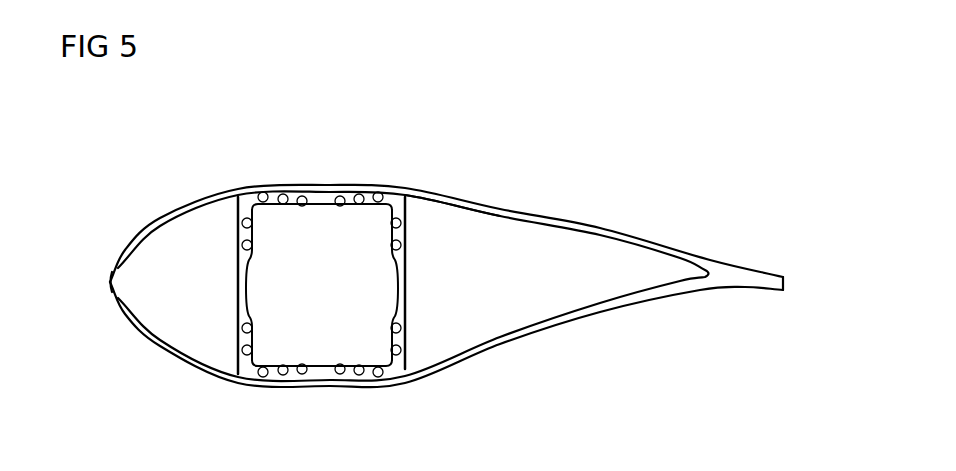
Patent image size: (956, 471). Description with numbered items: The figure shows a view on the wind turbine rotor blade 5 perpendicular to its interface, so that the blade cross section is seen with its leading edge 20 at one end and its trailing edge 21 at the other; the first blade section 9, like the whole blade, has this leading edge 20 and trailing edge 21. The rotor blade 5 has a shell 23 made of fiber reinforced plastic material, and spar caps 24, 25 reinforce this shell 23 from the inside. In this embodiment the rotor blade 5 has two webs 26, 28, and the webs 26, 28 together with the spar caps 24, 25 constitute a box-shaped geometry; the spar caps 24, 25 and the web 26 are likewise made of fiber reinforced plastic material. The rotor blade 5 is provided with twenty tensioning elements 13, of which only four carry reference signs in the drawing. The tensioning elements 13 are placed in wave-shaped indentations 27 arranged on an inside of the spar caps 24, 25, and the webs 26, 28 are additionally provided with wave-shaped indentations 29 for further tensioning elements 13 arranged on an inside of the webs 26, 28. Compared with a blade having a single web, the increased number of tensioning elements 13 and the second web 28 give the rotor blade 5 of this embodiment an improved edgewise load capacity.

The rotor blade 5 is at (200, 135).
The first blade section 9 is at (648, 232).
The tensioning element 13 is at (263, 192).
The leading edge 20 is at (110, 282).
The trailing edge 21 is at (786, 284).
The shell 23 is at (424, 194).
The spar cap 24 is at (316, 191).
The spar cap 25 is at (323, 378).
The structural web 26 is at (240, 283).
The wave-shaped indentation 27 is at (360, 194).
The web 28 is at (406, 283).
The wave-shaped indentation 29 is at (238, 228).